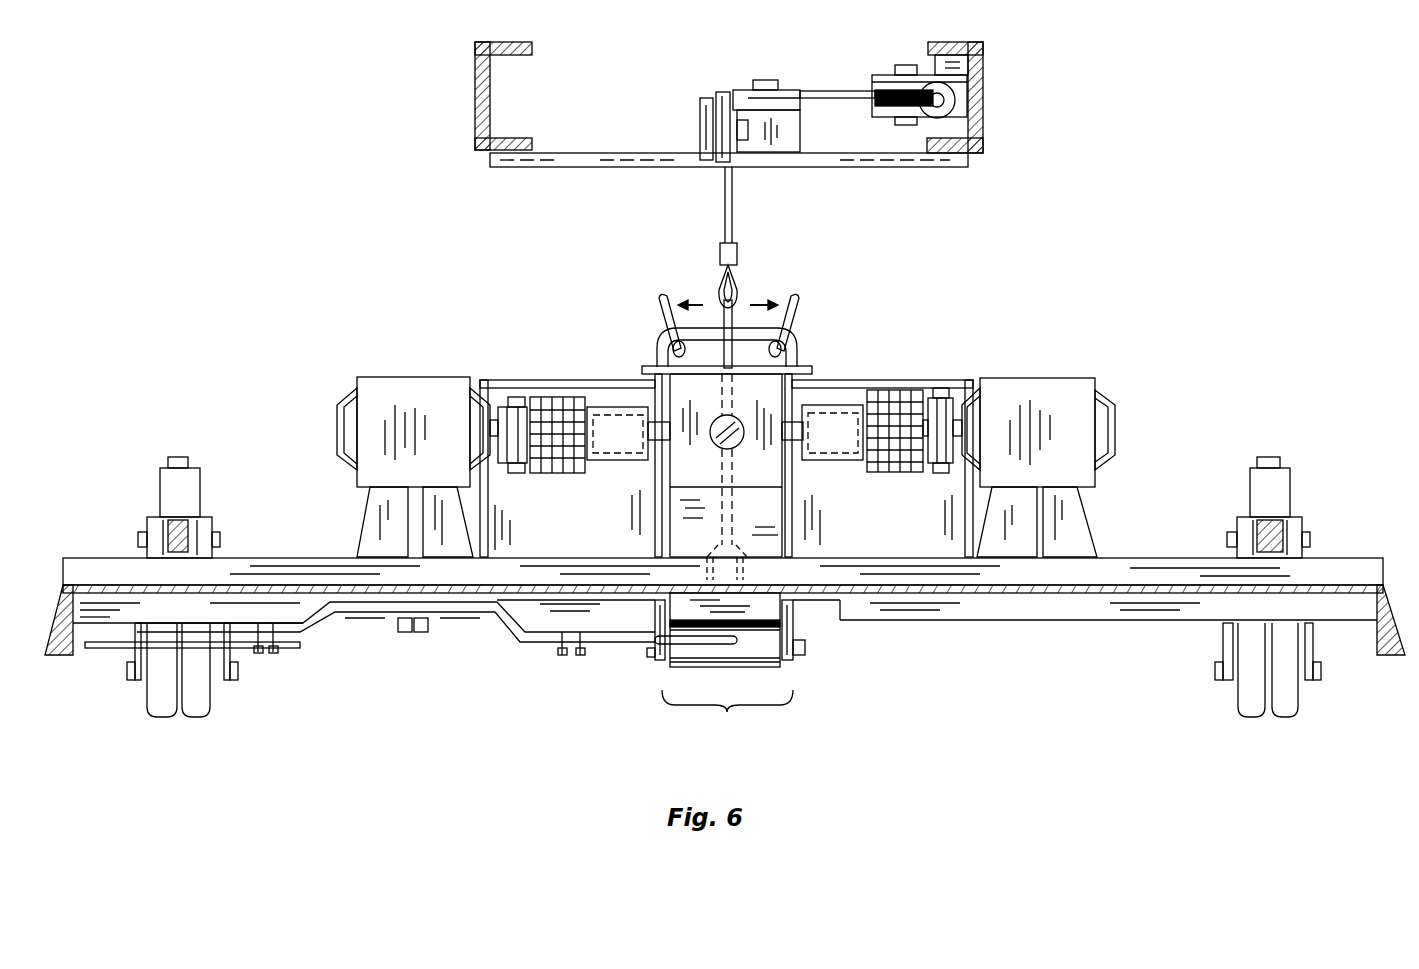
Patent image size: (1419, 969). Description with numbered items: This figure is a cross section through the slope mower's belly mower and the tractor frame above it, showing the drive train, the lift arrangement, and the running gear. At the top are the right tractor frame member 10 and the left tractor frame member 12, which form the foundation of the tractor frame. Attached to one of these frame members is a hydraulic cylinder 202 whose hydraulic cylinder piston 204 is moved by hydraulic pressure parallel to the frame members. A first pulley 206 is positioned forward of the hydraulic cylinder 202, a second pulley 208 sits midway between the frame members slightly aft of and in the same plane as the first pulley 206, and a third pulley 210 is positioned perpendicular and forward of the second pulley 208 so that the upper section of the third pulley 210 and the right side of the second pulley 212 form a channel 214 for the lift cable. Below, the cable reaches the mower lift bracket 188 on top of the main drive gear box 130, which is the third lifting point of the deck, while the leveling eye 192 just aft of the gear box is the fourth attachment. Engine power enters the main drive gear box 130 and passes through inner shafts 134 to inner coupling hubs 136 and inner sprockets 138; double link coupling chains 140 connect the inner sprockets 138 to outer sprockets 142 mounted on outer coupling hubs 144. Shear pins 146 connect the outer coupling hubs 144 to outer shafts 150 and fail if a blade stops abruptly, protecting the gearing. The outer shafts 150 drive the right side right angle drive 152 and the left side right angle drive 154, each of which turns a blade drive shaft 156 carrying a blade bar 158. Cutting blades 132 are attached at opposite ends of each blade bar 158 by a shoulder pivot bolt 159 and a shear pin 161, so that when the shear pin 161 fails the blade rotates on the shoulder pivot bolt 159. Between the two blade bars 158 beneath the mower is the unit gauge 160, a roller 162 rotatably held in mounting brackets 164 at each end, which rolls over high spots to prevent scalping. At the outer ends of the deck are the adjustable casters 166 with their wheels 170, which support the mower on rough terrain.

The right tractor frame member 10 is at (984, 60).
The left tractor frame member 12 is at (475, 50).
The main drive gear box 130 is at (765, 365).
The cutting blades 132 is at (105, 650).
The inner shafts 134 is at (790, 450).
The inner coupling hubs 136 is at (838, 405).
The inner sprockets 138 is at (887, 390).
The coupling chains 140 is at (898, 390).
The outer sprockets 142 is at (540, 397).
The outer coupling hubs 144 is at (945, 470).
The shear pins 146 is at (512, 397).
The outer shafts 150 is at (956, 403).
The right side right angle drive 152 is at (403, 377).
The left side right angle drive 154 is at (1067, 377).
The blade drive shafts 156 is at (405, 510).
The blade bars 158 is at (512, 625).
The shoulder pivot bolt 159 is at (276, 652).
The unit gauge 160 is at (727, 715).
The shear pin 161 is at (256, 652).
The roller 162 is at (785, 664).
The mounting brackets 164 is at (796, 633).
The adjustable casters 166 is at (1312, 520).
The wheels 170 is at (1235, 700).
The mower lift bracket 188 is at (693, 328).
The leveling eye 192 is at (782, 540).
The hydraulic cylinder 202 is at (975, 125).
The hydraulic cylinder piston 204 is at (975, 100).
The first pulley 206 is at (887, 110).
The second pulley 208 is at (785, 90).
The third pulley 210 is at (757, 162).
The right side of second pulley 212 is at (733, 96).
The channel 214 is at (717, 95).